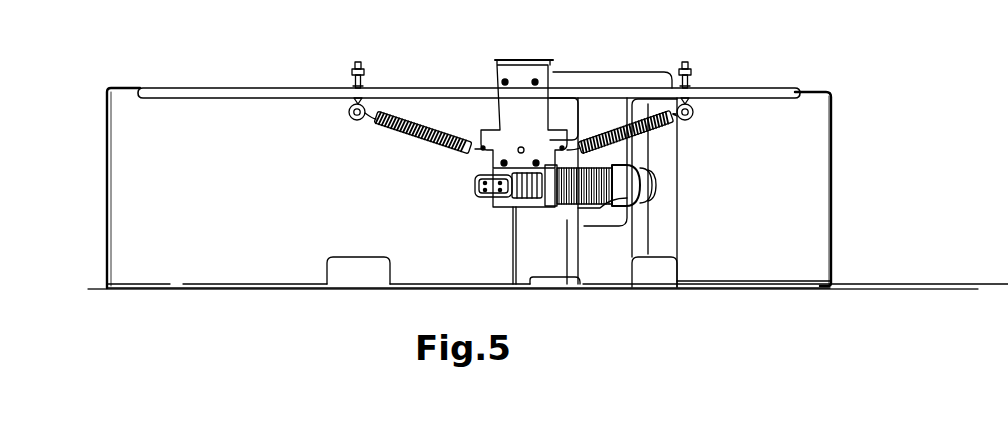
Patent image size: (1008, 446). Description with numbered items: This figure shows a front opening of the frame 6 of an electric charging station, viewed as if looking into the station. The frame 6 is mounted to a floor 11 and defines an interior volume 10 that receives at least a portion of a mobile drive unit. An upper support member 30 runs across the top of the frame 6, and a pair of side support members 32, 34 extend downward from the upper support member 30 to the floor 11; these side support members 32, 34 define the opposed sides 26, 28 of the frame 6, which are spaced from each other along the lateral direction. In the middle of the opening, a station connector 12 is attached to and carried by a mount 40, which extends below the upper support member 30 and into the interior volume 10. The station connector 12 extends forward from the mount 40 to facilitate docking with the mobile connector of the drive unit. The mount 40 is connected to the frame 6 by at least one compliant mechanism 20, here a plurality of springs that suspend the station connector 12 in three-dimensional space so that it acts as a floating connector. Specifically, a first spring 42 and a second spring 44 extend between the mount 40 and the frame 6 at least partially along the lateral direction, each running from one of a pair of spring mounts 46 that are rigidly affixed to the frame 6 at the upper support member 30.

The frame 6 is at (205, 58).
The interior volume of space 10 is at (248, 248).
The floor 11 is at (100, 288).
The station connector 12 is at (473, 186).
The compliant mechanism 20 is at (604, 128).
The side 26 is at (106, 198).
The side 28 is at (833, 190).
The upper support member 30 is at (277, 88).
The side support member 32 is at (282, 202).
The side support member 34 is at (759, 200).
The mount 40 is at (503, 118).
The first spring 42 is at (411, 132).
The second spring 44 is at (620, 123).
The spring mount 46 is at (346, 118).